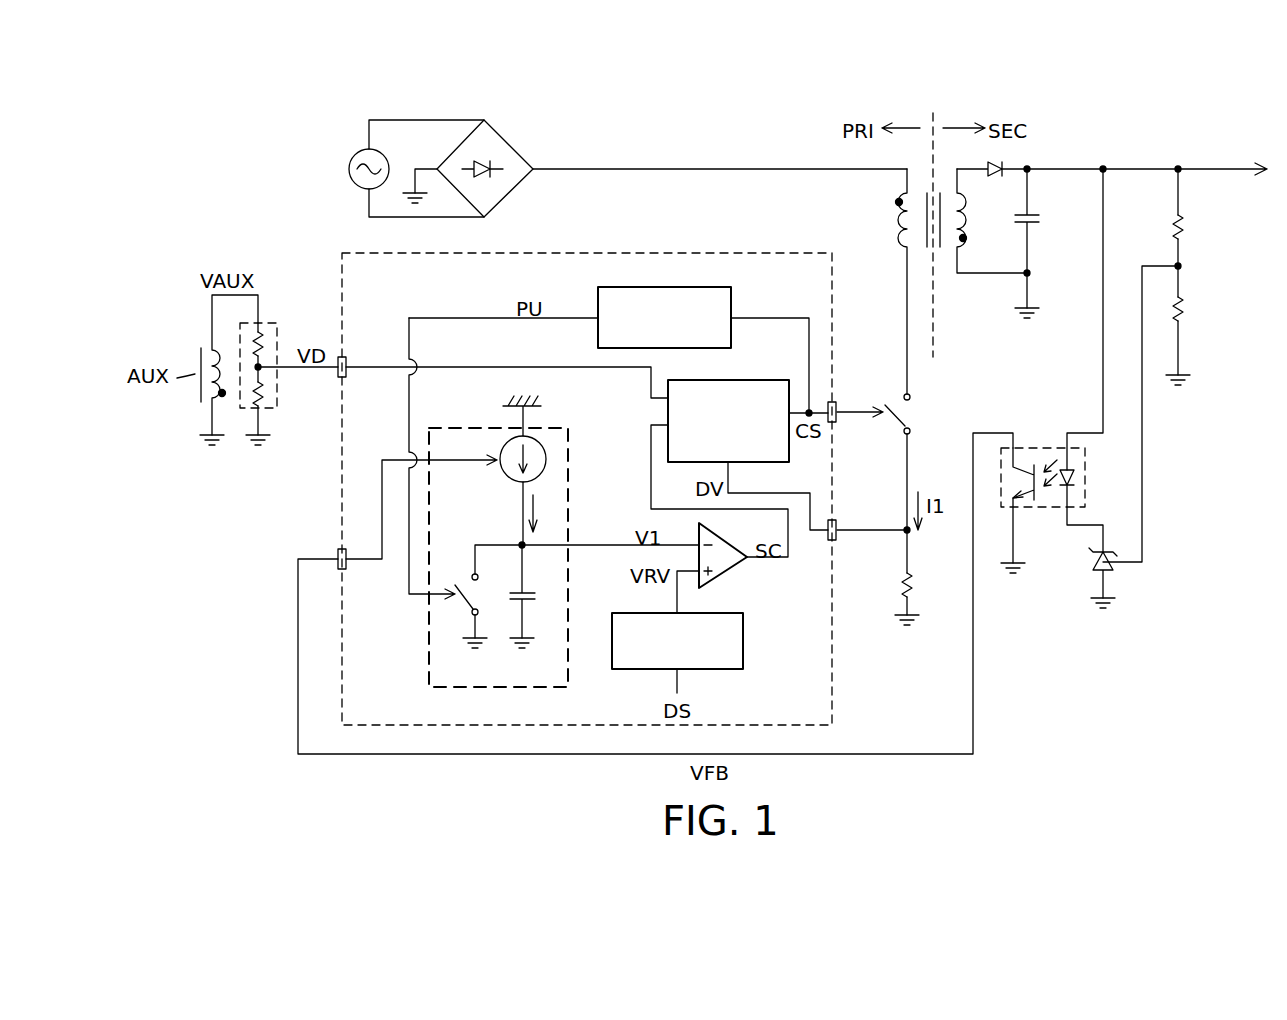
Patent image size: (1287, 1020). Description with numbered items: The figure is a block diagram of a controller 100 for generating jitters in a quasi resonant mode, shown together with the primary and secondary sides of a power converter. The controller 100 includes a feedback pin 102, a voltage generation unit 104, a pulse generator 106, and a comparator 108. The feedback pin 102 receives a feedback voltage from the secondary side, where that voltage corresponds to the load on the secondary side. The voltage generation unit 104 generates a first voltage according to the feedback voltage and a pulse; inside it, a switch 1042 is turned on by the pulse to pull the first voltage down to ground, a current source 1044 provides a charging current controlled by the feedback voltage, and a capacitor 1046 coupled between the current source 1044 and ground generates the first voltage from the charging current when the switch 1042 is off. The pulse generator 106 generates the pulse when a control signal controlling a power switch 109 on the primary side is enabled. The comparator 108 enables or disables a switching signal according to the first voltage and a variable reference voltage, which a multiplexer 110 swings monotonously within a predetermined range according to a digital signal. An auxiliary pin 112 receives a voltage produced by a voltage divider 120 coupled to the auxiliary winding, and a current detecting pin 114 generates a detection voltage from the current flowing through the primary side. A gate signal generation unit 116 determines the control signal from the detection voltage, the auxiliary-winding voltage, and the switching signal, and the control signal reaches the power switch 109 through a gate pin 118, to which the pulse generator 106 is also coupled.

The controller 100 is at (632, 251).
The feedback pin 102 is at (337, 551).
The voltage generation unit 104 is at (472, 426).
The pulse generator 106 is at (680, 287).
The comparator 108 is at (728, 570).
The power switch 109 is at (912, 411).
The multiplexer 110 is at (745, 641).
The auxiliary pin 112 is at (340, 369).
The current detecting pin 114 is at (838, 542).
The gate signal generation unit 116 is at (742, 379).
The gate pin 118 is at (838, 405).
The voltage divider 120 is at (271, 319).
The switch 1042 is at (455, 607).
The current source 1044 is at (546, 452).
The capacitor 1046 is at (545, 597).